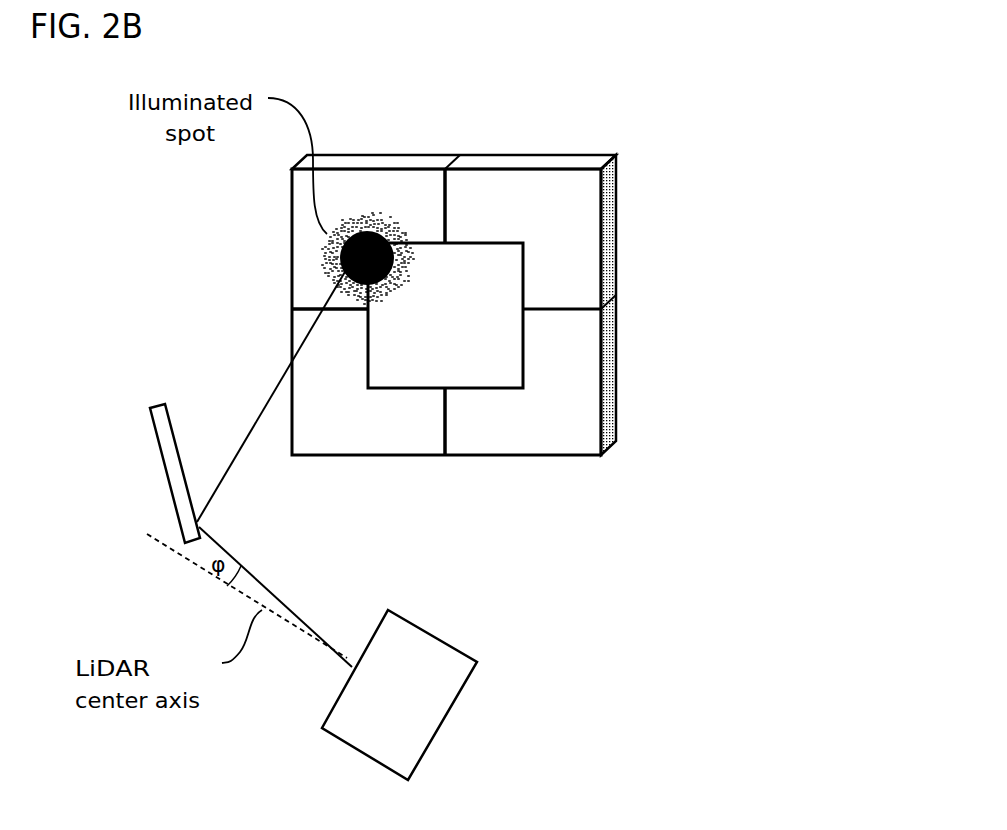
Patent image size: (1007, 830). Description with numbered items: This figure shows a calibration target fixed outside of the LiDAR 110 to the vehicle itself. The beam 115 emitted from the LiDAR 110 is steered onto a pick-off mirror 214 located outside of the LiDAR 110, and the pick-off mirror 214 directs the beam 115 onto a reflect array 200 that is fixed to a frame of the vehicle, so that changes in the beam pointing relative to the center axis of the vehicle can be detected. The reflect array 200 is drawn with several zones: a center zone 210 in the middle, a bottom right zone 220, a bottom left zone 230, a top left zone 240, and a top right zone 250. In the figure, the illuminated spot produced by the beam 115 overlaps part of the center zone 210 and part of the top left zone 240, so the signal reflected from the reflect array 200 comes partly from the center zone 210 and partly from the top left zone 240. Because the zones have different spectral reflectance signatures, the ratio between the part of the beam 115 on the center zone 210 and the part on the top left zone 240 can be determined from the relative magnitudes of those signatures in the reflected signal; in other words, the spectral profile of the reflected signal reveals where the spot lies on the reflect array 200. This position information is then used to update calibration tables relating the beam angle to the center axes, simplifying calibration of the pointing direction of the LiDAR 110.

The reflect array 200 is at (648, 135).
The center zone 210 is at (523, 363).
The bottom right zone 220 is at (617, 357).
The bottom left zone 230 is at (427, 455).
The top left zone 240 is at (291, 268).
The top right zone 250 is at (617, 221).
The pick-off mirror 214 is at (150, 432).
The beam 115 is at (222, 478).
The LiDAR 110 is at (399, 695).